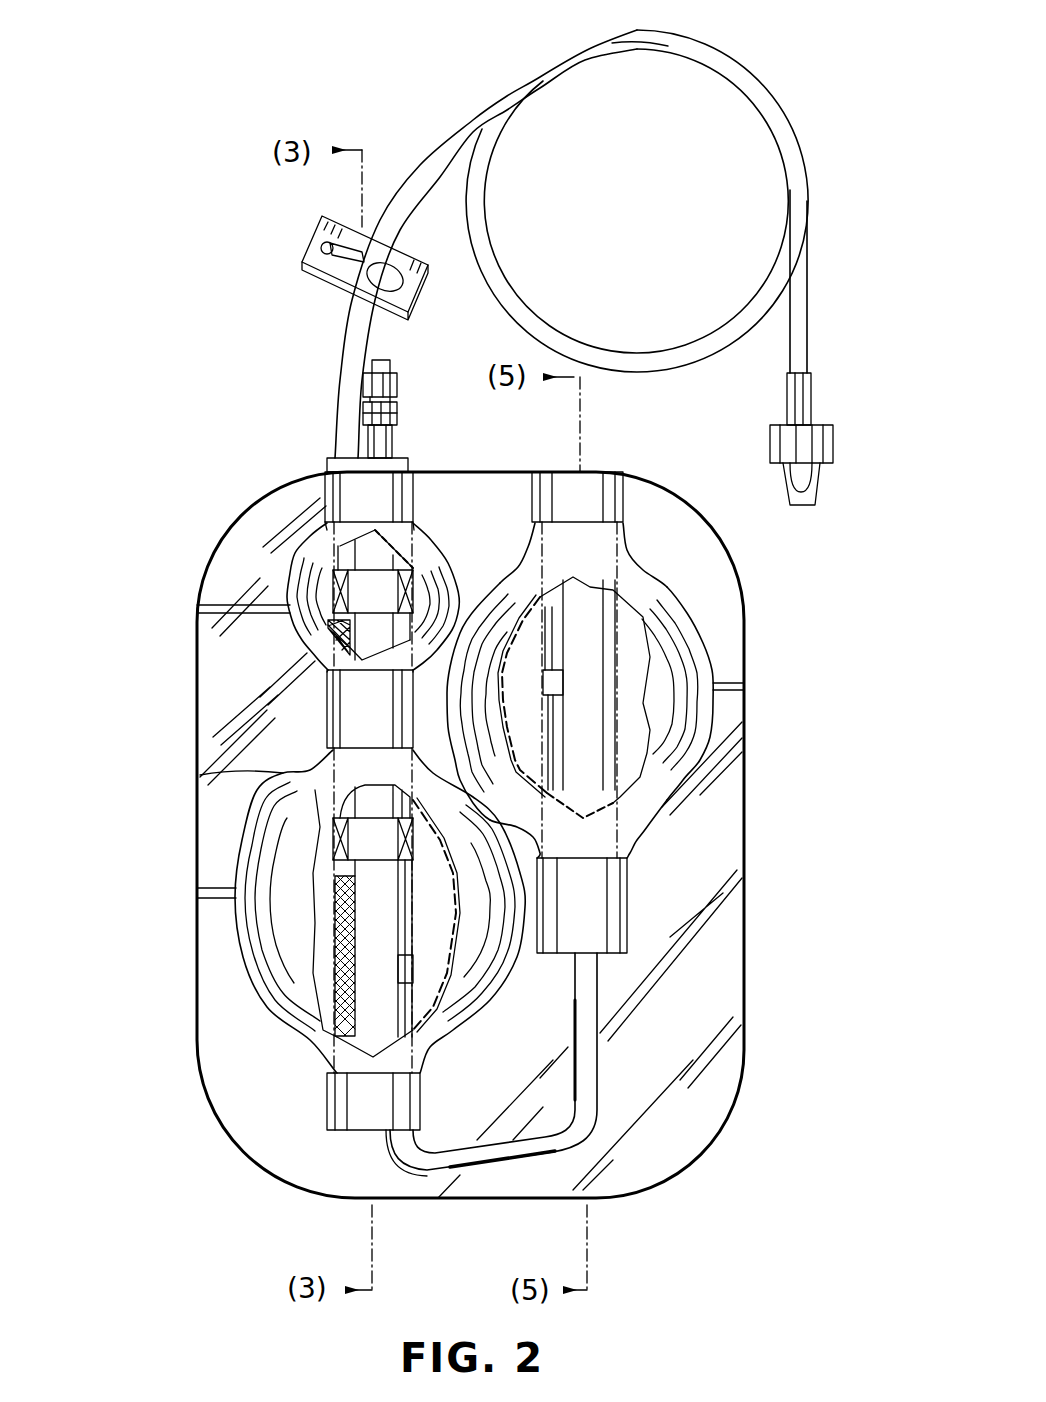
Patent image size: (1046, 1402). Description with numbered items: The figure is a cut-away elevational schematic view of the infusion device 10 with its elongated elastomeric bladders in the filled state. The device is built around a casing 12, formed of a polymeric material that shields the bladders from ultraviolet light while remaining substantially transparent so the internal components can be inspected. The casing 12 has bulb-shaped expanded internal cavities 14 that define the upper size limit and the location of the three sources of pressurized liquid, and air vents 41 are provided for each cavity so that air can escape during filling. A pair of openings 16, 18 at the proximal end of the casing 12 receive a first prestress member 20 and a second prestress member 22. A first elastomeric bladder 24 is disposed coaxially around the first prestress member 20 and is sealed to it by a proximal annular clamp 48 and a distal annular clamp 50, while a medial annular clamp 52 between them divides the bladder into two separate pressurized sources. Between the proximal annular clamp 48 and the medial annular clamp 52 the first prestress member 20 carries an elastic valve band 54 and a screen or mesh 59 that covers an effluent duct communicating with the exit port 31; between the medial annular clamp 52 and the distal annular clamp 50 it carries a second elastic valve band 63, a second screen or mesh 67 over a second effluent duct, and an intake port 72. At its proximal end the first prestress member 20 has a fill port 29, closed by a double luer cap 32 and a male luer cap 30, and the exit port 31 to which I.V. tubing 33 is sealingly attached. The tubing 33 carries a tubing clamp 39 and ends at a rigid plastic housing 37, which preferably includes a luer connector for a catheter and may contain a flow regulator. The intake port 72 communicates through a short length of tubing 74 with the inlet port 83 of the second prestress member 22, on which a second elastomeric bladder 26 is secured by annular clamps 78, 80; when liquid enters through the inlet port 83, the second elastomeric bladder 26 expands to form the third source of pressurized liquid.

The infusion device 10 is at (152, 1176).
The casing 12 is at (705, 565).
The internal cavities 14 is at (330, 702).
The opening 16 is at (415, 470).
The opening 18 is at (614, 486).
The first prestress member 20 is at (318, 528).
The second prestress member 22 is at (597, 553).
The first elastomeric bladder 24 is at (300, 770).
The second elastomeric bladder 26 is at (640, 841).
The fill port 29 is at (393, 443).
The male luer cap 30 is at (380, 373).
The exit port 31 is at (332, 457).
The double luer cap 32 is at (400, 393).
The I.V. tubing 33 is at (340, 360).
The rigid plastic housing 37 is at (835, 453).
The tubing clamp 39 is at (407, 288).
The air vents 41 is at (197, 608).
The proximal annular clamp 48 is at (330, 490).
The distal annular clamp 50 is at (337, 1115).
The medial annular clamp 52 is at (320, 712).
The elastic valve band 54 is at (357, 587).
The screen or mesh 59 is at (327, 628).
The second elastic valve band 63 is at (365, 845).
The second screen or mesh 67 is at (343, 920).
The intake port 72 is at (340, 1005).
The tubing 74 is at (515, 1157).
The annular clamp 78 is at (576, 482).
The annular clamp 80 is at (610, 930).
The inlet port 83 is at (560, 685).